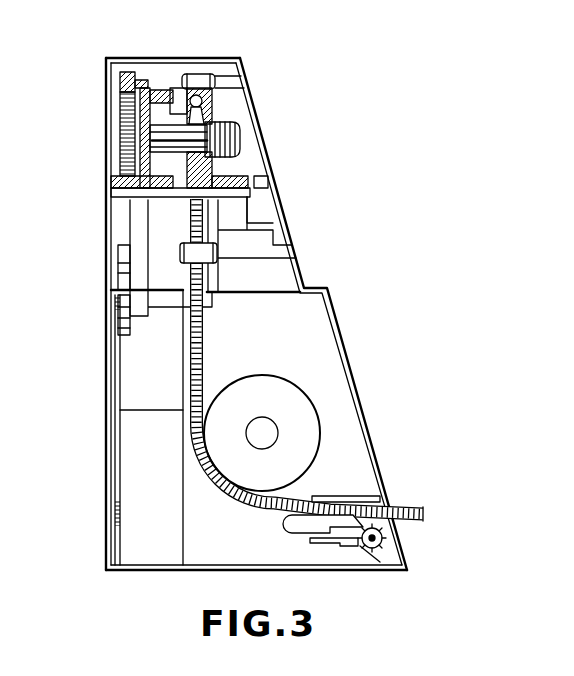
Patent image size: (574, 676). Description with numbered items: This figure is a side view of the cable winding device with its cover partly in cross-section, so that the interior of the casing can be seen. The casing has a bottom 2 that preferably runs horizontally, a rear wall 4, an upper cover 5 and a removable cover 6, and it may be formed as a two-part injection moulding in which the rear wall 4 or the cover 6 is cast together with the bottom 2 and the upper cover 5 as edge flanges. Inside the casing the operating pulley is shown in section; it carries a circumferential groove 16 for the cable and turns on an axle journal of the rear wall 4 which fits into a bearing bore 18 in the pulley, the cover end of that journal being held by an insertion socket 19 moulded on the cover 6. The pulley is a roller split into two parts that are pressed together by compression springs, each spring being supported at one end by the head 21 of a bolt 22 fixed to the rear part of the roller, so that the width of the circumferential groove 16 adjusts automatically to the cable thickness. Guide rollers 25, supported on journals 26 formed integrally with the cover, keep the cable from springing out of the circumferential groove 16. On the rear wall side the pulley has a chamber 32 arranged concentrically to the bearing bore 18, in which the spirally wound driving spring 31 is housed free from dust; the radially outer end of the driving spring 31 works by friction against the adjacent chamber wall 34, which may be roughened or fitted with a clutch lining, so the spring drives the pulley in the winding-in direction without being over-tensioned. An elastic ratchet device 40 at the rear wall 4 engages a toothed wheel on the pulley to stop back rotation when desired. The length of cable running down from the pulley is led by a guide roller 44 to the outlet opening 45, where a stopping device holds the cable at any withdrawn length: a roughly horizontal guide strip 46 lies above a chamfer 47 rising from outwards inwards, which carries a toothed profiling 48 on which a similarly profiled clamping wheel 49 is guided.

The bottom 2 is at (190, 571).
The rear wall 4 is at (108, 346).
The upper cover 5 is at (157, 58).
The removable cover 6 is at (314, 290).
The circumferential groove 16 is at (202, 112).
The bearing bore 18 is at (182, 191).
The insertion socket 19 is at (246, 190).
The head 21 is at (234, 140).
The bolt 22 is at (200, 134).
The guide rollers 25 is at (200, 80).
The journals 26 is at (232, 73).
The driving spring 31 is at (128, 121).
The chamber 32 is at (142, 148).
The chamber wall 34 is at (124, 79).
The ratchet device 40 is at (118, 410).
The guide roller 44 is at (264, 376).
The outlet opening 45 is at (400, 500).
The guide strip 46 is at (350, 496).
The chamfer 47 is at (318, 545).
The toothed profiling 48 is at (364, 532).
The clamping wheel 49 is at (365, 560).